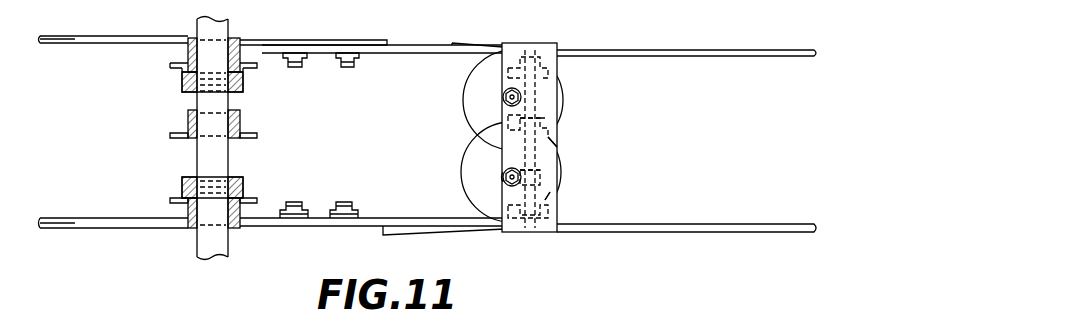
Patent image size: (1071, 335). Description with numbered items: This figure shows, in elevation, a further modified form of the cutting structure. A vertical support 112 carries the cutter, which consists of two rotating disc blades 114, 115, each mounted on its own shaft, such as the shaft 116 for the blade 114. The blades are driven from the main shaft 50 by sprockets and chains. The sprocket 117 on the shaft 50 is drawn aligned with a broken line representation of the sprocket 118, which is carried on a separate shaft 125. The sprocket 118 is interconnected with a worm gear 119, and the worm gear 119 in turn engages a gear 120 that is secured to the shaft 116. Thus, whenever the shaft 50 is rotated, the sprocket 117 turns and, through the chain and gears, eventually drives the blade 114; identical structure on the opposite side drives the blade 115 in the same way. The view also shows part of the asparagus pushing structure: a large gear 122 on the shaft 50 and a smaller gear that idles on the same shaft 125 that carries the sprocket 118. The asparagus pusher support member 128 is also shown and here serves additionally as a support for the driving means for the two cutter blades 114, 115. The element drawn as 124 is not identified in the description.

The shaft 50 is at (203, 237).
The vertical support 112 is at (560, 229).
The rotating disc blade 114 is at (461, 165).
The rotating disc blade 115 is at (463, 88).
The shaft 116 is at (508, 173).
The sprocket 117 is at (243, 192).
The sprocket 118 is at (549, 195).
The worm gear 119 is at (541, 175).
The gear 120 is at (504, 179).
The large gear 122 is at (185, 115).
The upper slot 124 is at (540, 122).
The shaft 125 is at (562, 147).
The asparagus pusher support member 128 is at (383, 218).